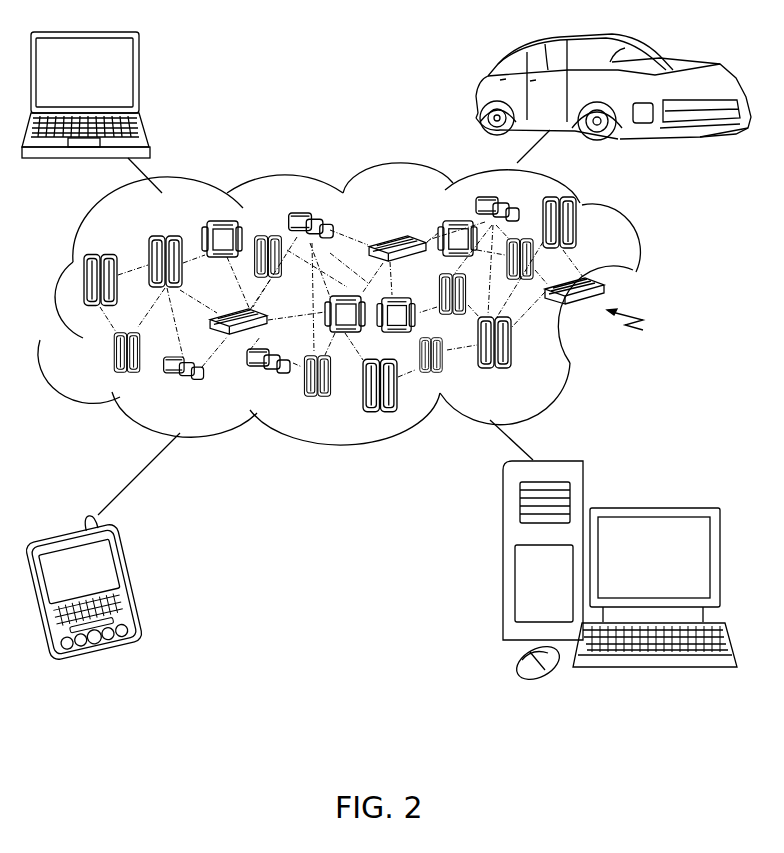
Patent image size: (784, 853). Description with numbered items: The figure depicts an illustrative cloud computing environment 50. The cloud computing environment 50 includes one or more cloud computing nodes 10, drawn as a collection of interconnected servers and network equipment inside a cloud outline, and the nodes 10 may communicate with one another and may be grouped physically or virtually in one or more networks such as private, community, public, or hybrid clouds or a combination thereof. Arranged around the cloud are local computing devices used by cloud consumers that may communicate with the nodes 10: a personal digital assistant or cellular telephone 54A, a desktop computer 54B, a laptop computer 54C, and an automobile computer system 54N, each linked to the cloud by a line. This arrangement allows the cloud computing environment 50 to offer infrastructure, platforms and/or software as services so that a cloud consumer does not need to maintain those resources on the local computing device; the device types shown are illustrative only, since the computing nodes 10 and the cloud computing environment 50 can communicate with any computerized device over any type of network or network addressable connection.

The cloud computing nodes 10 is at (368, 304).
The cloud computing environment 50 is at (650, 288).
The personal digital assistant (PDA) or cellular telephone 54A is at (132, 580).
The desktop computer 54B is at (650, 508).
The laptop computer 54C is at (140, 80).
The automobile computer system 54N is at (480, 95).